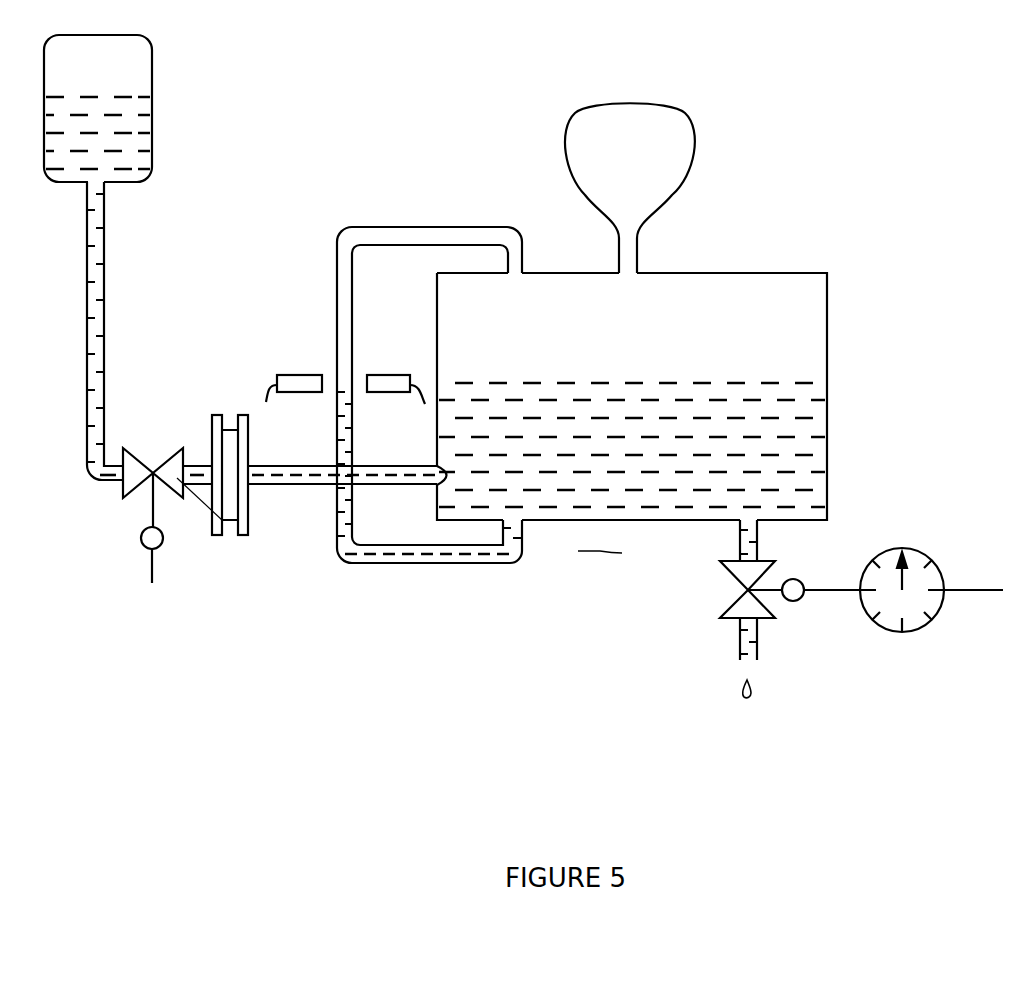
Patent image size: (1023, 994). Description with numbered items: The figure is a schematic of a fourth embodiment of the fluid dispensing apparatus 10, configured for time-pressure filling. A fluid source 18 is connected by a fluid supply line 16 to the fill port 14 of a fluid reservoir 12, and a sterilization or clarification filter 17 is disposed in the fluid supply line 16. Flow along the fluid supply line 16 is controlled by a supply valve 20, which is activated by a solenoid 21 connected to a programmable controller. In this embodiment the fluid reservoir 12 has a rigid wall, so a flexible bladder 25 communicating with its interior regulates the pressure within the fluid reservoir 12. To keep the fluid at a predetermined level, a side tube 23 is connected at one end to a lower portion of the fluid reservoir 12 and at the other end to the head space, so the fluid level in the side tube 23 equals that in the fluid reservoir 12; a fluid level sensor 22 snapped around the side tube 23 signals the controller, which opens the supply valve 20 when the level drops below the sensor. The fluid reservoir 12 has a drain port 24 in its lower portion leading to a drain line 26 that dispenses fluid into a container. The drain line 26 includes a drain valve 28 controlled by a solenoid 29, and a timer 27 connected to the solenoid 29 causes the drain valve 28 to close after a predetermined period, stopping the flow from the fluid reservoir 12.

The dispensing apparatus 10 is at (820, 136).
The fluid reservoir 12 is at (731, 290).
The fill port 14 is at (445, 494).
The fluid supply line 16 is at (97, 288).
The clarification filter 17 is at (250, 512).
The fluid source 18 is at (143, 76).
The supply valve 20 is at (170, 472).
The solenoid 21 is at (141, 535).
The fluid level sensor 22 is at (300, 375).
The side tube 23 is at (430, 238).
The drain port 24 is at (750, 520).
The bladder 25 is at (665, 125).
The drain line 26 is at (752, 645).
The timer 27 is at (915, 630).
The drain valve 28 is at (740, 607).
The solenoid 29 is at (800, 600).